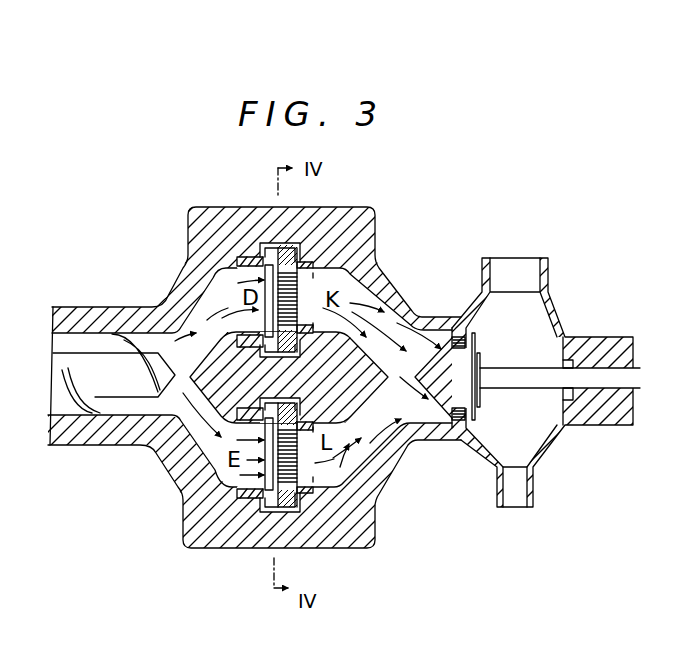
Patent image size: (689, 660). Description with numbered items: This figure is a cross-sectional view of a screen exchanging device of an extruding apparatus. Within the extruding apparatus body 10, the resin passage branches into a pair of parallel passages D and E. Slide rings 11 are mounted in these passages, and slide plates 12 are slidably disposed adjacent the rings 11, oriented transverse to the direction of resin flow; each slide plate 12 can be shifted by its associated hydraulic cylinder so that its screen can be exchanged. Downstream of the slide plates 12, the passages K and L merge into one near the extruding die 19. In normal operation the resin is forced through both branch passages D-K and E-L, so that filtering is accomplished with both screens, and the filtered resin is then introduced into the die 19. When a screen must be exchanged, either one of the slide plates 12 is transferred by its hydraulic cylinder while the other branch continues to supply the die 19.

The extruding apparatus body 10 is at (220, 530).
The slide ring 11 is at (316, 266).
The slide plate 12 is at (310, 258).
The extruding die 19 is at (470, 352).